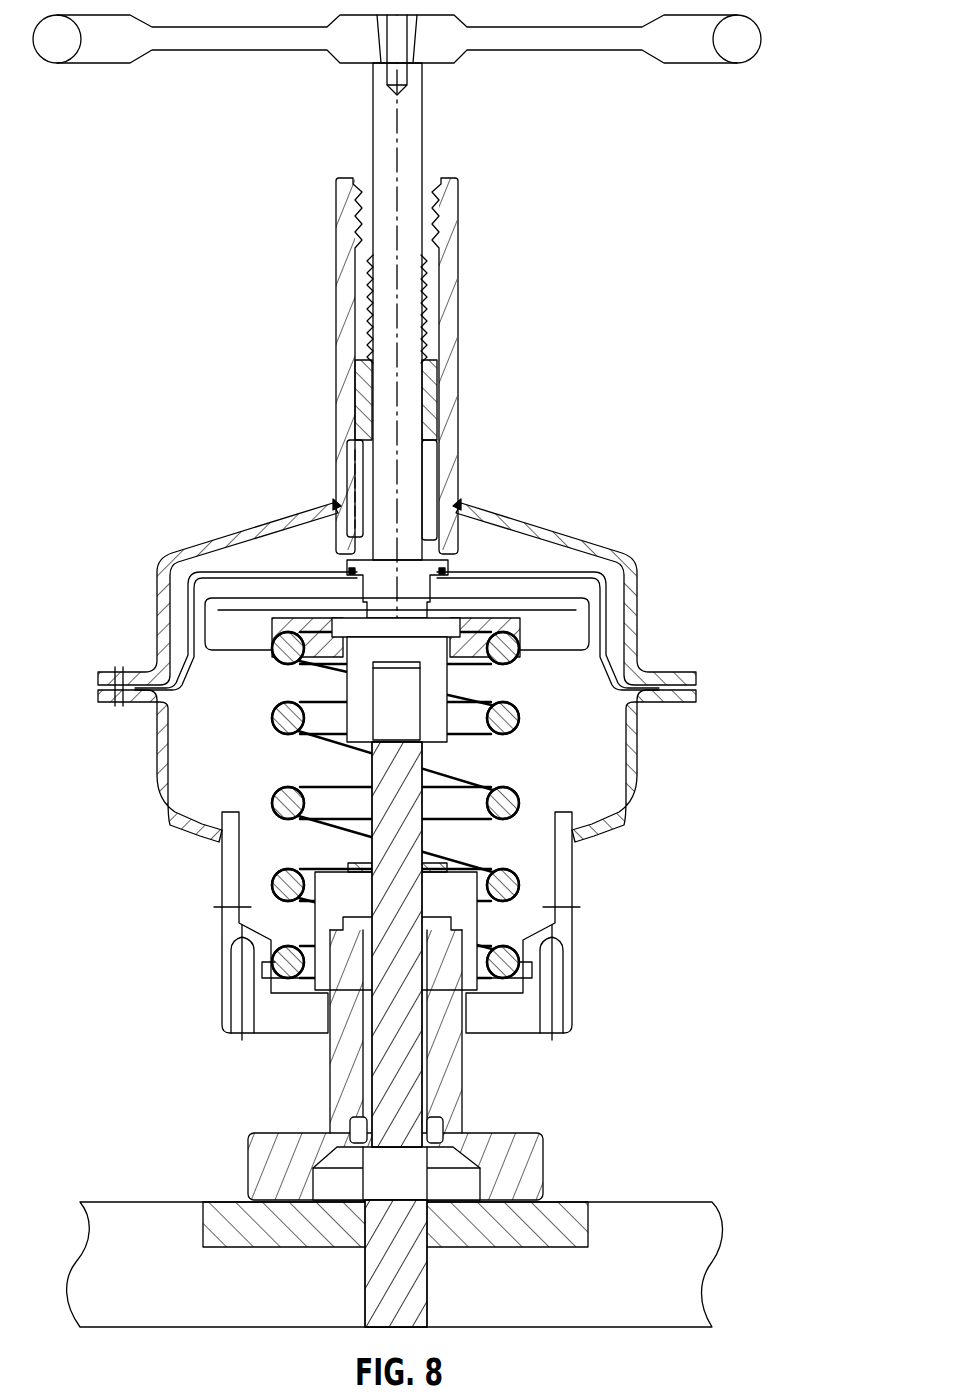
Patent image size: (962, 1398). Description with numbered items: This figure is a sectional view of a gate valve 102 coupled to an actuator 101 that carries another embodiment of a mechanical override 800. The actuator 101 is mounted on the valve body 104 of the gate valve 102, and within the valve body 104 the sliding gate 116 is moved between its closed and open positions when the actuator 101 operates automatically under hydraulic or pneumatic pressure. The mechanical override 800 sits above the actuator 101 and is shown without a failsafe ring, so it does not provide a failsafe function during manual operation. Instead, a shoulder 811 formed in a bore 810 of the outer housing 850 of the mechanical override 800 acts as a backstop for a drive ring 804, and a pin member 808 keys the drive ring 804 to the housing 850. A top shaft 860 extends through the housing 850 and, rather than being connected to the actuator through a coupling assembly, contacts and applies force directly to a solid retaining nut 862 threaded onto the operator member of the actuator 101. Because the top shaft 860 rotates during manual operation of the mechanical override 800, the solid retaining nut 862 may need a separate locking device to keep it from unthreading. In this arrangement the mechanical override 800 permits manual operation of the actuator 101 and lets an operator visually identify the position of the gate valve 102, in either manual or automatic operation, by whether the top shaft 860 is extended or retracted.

The mechanical override 800 is at (397, 670).
The top shaft 860 is at (412, 262).
The outer housing 850 is at (455, 295).
The shoulder 811 is at (437, 380).
The drive ring 804 is at (440, 410).
The bore 810 is at (430, 460).
The pin member 808 is at (350, 420).
The solid retaining nut 862 is at (372, 570).
The actuator 101 is at (650, 543).
The gate valve 102 is at (395, 1034).
The valve body 104 is at (505, 1145).
The sliding gate 116 is at (405, 1176).